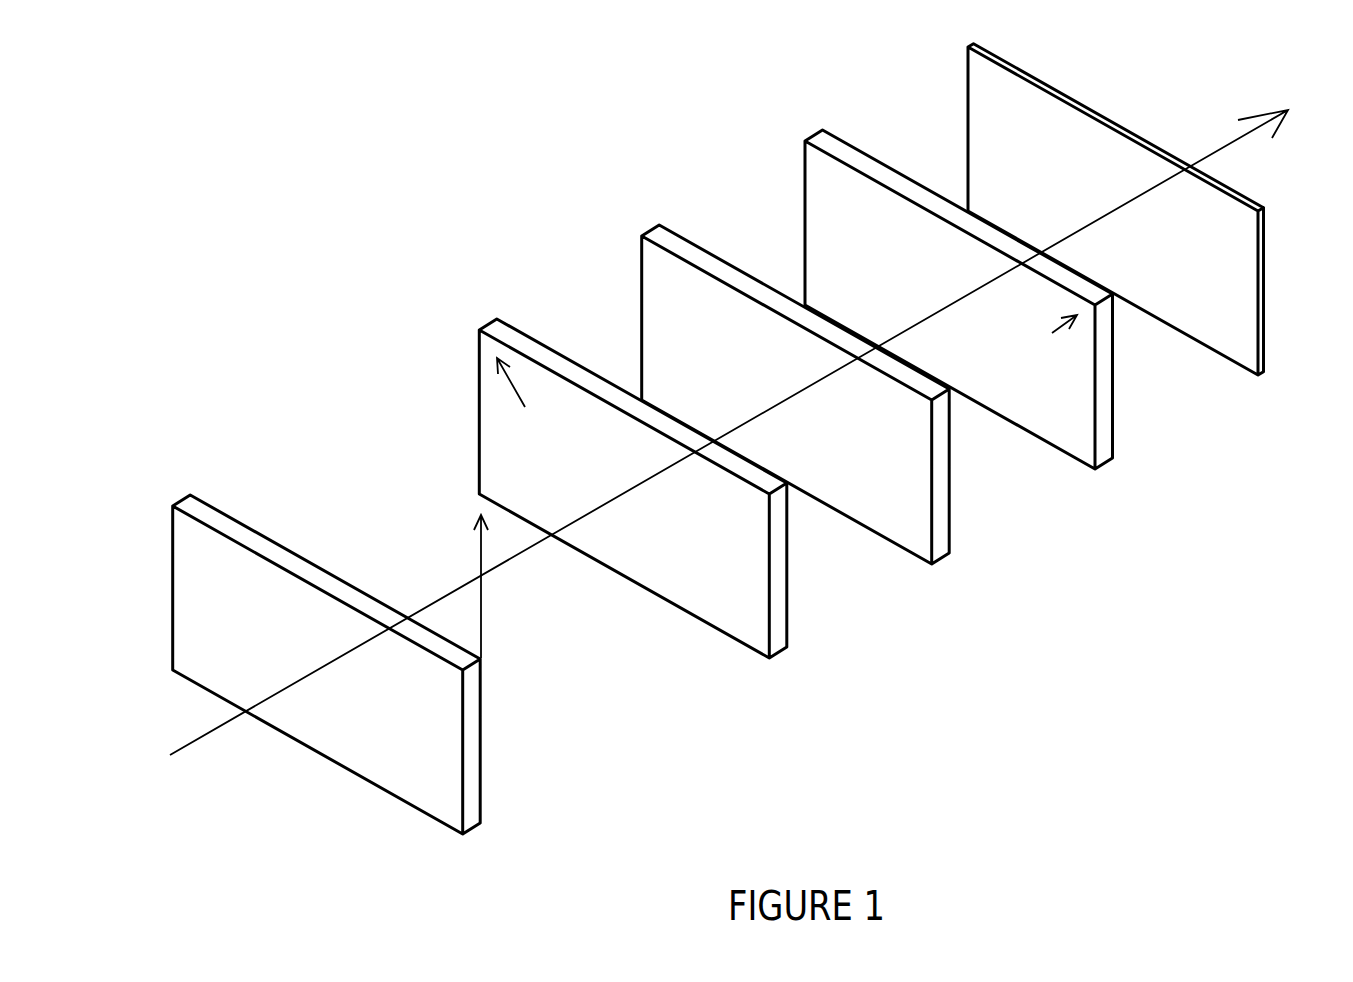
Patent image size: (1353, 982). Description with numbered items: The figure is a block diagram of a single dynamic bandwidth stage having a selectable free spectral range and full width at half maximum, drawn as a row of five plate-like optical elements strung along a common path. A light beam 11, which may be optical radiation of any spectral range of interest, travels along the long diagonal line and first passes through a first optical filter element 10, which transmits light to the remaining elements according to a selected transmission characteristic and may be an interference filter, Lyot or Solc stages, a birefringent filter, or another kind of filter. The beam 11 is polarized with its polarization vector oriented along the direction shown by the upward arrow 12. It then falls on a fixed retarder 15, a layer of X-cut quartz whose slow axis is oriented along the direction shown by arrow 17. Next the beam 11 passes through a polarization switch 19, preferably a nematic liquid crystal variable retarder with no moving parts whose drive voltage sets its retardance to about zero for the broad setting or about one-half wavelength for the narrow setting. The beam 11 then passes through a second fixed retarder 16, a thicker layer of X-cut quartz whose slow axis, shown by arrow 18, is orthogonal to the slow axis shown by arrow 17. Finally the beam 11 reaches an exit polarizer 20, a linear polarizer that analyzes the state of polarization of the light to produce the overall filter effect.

The first optical filter element 10 is at (473, 838).
The light beam 11 is at (188, 750).
The arrow 12 is at (485, 625).
The fixed retarder 15 is at (780, 660).
The fixed retarder 16 is at (1101, 472).
The arrow 17 is at (518, 388).
The arrow 18 is at (1058, 336).
The polarization switch 19 is at (947, 566).
The exit polarizer 20 is at (1258, 380).